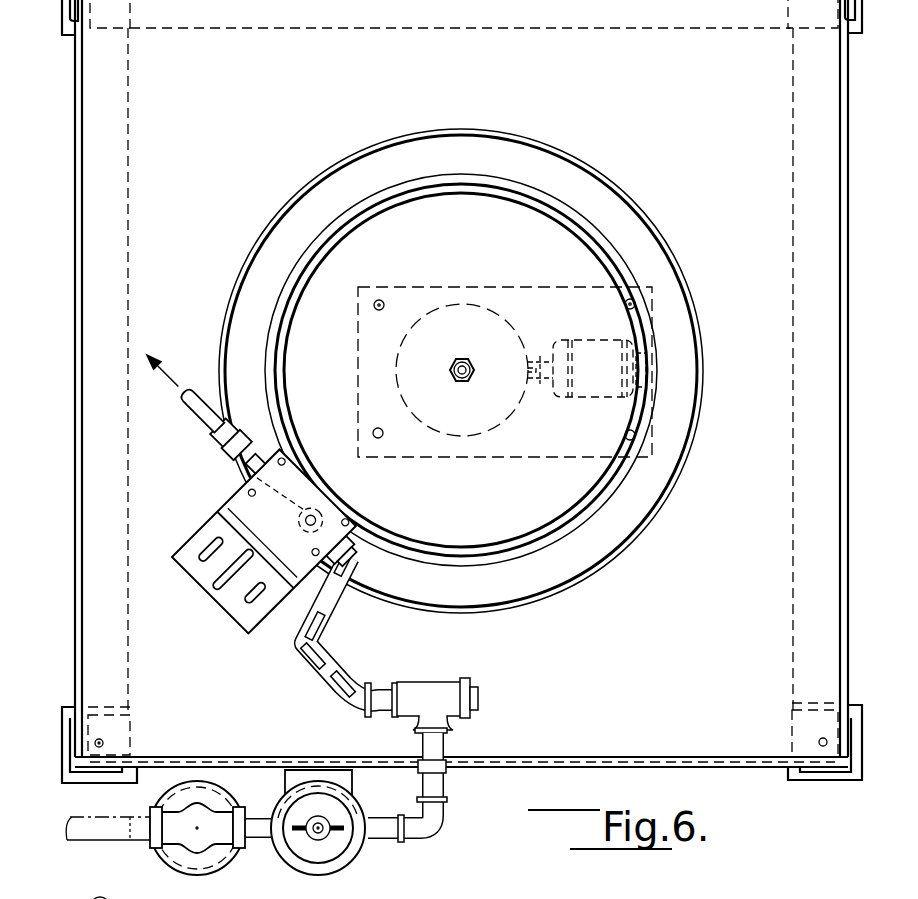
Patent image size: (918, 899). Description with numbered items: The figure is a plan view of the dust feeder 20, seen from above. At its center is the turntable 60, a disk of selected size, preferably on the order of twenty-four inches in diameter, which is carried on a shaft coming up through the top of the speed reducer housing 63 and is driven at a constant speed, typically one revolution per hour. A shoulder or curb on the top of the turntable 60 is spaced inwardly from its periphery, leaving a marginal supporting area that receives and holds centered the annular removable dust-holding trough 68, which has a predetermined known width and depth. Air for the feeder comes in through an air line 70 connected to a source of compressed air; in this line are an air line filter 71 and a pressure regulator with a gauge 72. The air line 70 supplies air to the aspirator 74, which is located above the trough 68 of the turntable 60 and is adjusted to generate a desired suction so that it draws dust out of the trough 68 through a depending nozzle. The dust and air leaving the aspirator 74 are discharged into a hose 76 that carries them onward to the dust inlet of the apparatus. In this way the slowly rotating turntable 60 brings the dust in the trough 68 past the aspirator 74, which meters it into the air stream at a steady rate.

The drum assembly 20 is at (483, 370).
The turntable 60 is at (548, 232).
The speed reducer housing 63 is at (768, 162).
The annular removable dust-holding trough 68 is at (652, 273).
The air line 70 is at (118, 840).
The air line filter 71 is at (203, 860).
The pressure regulator with a gauge 72 is at (327, 843).
The aspirator 74 is at (278, 483).
The hose 76 is at (207, 415).